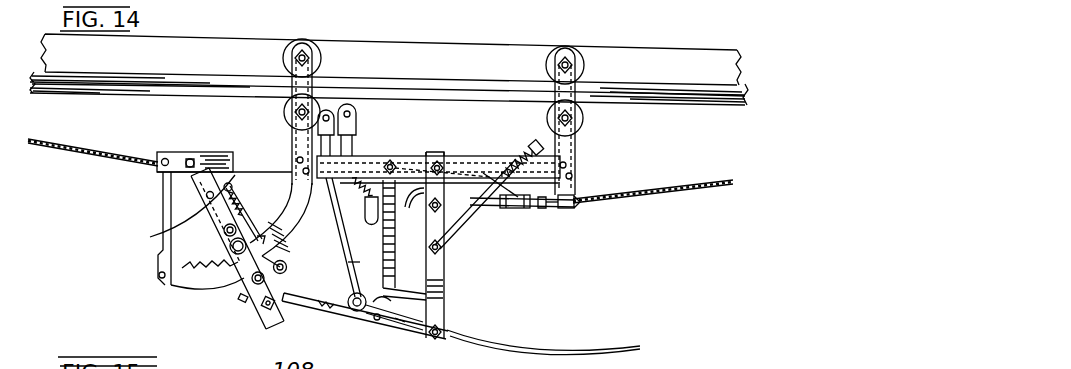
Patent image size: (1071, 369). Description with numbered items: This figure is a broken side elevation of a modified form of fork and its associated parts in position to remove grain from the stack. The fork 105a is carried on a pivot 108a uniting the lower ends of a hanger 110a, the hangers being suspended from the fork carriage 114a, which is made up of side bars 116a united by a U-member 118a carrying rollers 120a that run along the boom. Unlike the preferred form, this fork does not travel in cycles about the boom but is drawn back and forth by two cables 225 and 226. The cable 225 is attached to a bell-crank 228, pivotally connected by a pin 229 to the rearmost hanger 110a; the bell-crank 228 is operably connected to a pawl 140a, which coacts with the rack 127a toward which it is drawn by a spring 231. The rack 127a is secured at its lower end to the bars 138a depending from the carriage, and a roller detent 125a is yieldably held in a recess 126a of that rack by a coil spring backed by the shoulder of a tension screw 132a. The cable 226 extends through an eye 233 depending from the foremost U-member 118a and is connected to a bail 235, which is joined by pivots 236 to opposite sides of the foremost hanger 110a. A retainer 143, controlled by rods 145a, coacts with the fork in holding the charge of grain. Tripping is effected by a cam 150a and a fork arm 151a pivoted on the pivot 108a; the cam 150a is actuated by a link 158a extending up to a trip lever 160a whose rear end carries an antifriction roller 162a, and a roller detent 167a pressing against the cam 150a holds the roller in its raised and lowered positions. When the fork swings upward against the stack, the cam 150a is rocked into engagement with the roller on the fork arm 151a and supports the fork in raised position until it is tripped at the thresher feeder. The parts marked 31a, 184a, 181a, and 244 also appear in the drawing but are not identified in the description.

The rail 31a is at (108, 60).
The antifriction roller 162a is at (325, 110).
The bracket 184a is at (360, 116).
The trip lever 160a is at (345, 146).
The rollers 120a is at (586, 63).
The U-member 118a is at (576, 148).
The side bars of the carriage 116a is at (160, 153).
The bell-crank 228 is at (232, 185).
The cable 225 is at (59, 150).
The cable 226 is at (715, 190).
The fork carriage 114a is at (522, 137).
The rods 145a is at (488, 156).
The bars 138a is at (162, 210).
The pawl 140a is at (262, 228).
The pin 229 is at (152, 238).
The spring 231 is at (228, 213).
The diagonal link 181a is at (345, 190).
The recess 126a is at (287, 264).
The link 158a is at (354, 268).
The roller detent 125a is at (283, 271).
The pivots 236 is at (452, 214).
The bail 235 is at (515, 212).
The retainer 143 is at (565, 210).
The eye 233 is at (575, 212).
The bar 244 is at (399, 290).
The hanger 110a is at (447, 278).
The rack 127a is at (185, 287).
The tension screw 132a is at (253, 303).
The pivot 108a is at (452, 330).
The roller detent 167a is at (343, 323).
The fork arm 151a is at (403, 323).
The cam 150a is at (370, 330).
The fork 105a is at (577, 352).